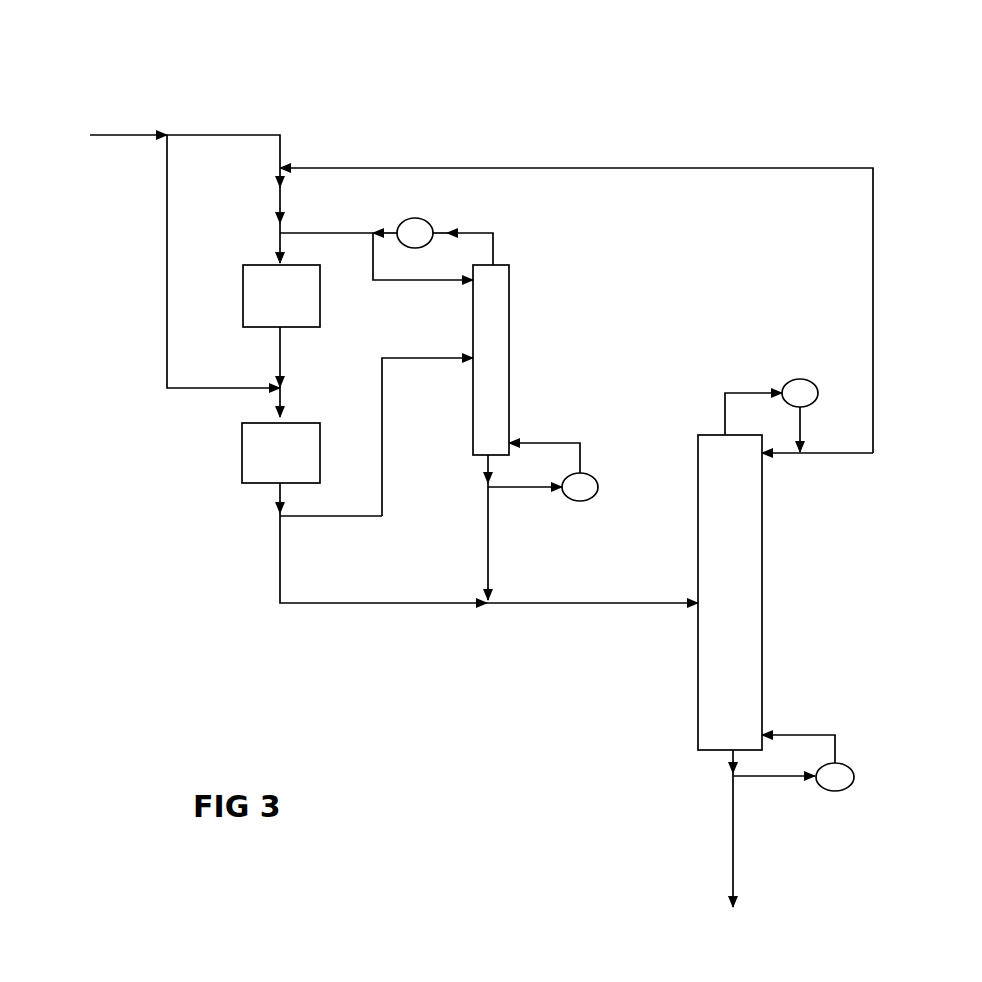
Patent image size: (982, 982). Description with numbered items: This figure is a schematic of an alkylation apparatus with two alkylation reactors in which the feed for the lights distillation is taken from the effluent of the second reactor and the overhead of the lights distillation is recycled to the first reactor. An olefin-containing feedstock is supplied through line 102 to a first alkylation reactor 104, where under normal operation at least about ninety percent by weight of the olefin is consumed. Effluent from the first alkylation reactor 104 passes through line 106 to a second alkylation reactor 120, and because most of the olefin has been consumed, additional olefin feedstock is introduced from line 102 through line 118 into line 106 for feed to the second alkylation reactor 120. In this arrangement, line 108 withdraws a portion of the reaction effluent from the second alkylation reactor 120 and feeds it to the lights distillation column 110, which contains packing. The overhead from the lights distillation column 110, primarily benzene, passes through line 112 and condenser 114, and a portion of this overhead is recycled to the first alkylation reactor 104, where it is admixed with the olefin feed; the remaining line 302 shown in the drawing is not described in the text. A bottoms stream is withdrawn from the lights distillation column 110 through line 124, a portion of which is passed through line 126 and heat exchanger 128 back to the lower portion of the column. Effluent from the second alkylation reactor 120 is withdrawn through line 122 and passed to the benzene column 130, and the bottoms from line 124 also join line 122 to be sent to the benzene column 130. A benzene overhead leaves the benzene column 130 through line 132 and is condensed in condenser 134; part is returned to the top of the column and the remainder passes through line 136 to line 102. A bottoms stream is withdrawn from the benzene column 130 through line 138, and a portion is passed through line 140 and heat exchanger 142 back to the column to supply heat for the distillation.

The line 102 is at (128, 135).
The first alkylation reactor 104 is at (260, 263).
The line 106 is at (273, 338).
The line 108 is at (380, 398).
The lights distillation column 110 is at (510, 310).
The line 112 is at (497, 245).
The condenser 114 is at (427, 222).
The line 118 is at (167, 277).
The second alkylation reactor 120 is at (240, 442).
The line 122 is at (277, 493).
The line 124 is at (485, 462).
The line 126 is at (522, 488).
The heat exchanger 128 is at (590, 477).
The benzene column 130 is at (698, 678).
The line 132 is at (753, 392).
The condenser 134 is at (808, 378).
The line 136 is at (828, 453).
The line 138 is at (732, 755).
The line 140 is at (768, 777).
The heat exchanger 142 is at (852, 772).
The recycle stream to reactor 302 is at (425, 282).